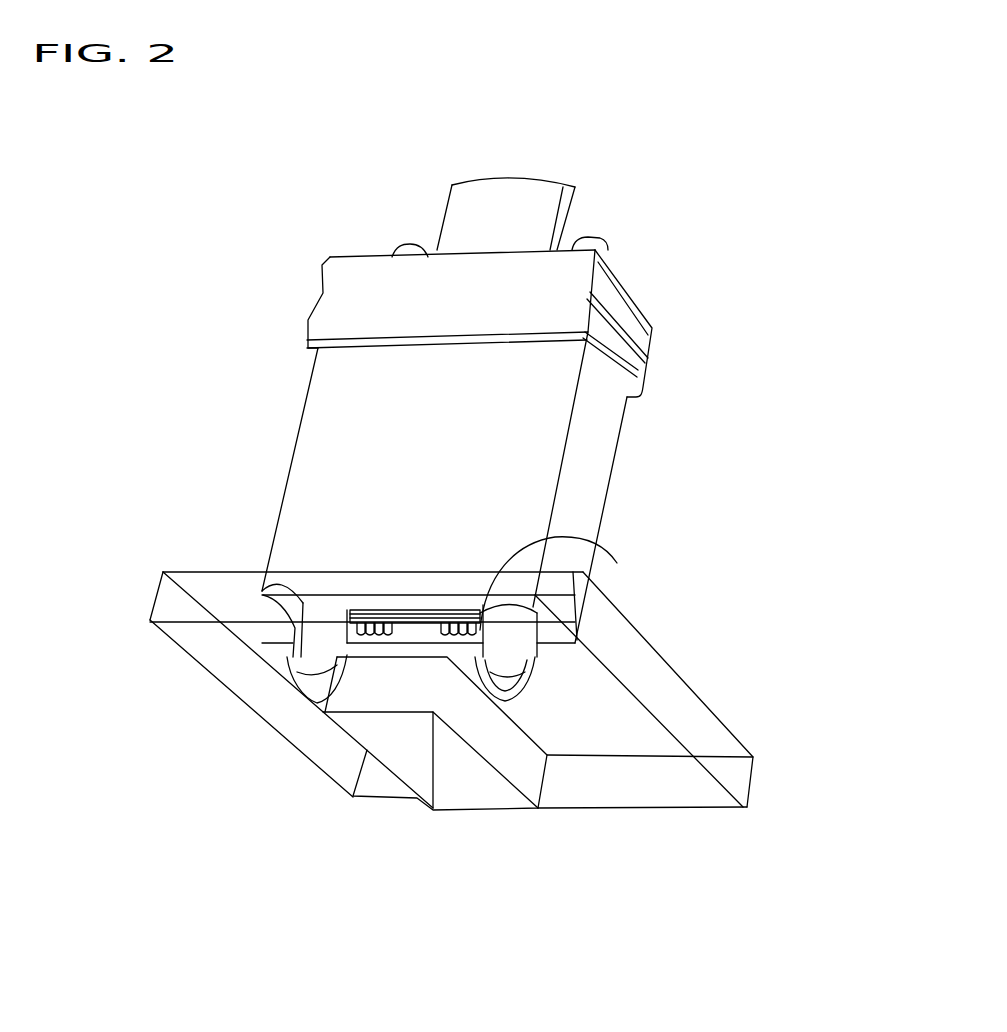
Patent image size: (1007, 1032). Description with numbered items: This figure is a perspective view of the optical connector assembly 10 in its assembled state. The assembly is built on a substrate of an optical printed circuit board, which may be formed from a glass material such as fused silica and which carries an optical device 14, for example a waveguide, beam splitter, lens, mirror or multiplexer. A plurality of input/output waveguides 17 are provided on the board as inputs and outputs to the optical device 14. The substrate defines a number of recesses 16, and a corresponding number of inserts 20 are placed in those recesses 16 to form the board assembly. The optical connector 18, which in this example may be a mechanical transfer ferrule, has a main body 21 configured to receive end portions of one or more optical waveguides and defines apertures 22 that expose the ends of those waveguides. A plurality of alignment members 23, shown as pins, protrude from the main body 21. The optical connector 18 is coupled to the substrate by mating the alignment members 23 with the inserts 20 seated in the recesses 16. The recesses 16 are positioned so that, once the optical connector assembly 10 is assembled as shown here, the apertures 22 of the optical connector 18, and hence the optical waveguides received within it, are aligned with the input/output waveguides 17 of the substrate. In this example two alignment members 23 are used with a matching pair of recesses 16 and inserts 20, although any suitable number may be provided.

The optical connector assembly 10 is at (165, 417).
The optical device 14 is at (462, 812).
The recesses 16 is at (268, 588).
The input/output waveguides 17 is at (575, 537).
The optical connector 18 is at (668, 326).
The inserts 20 is at (288, 640).
The main body 21 is at (615, 457).
The apertures 22 is at (358, 603).
The alignment members 23 is at (495, 703).